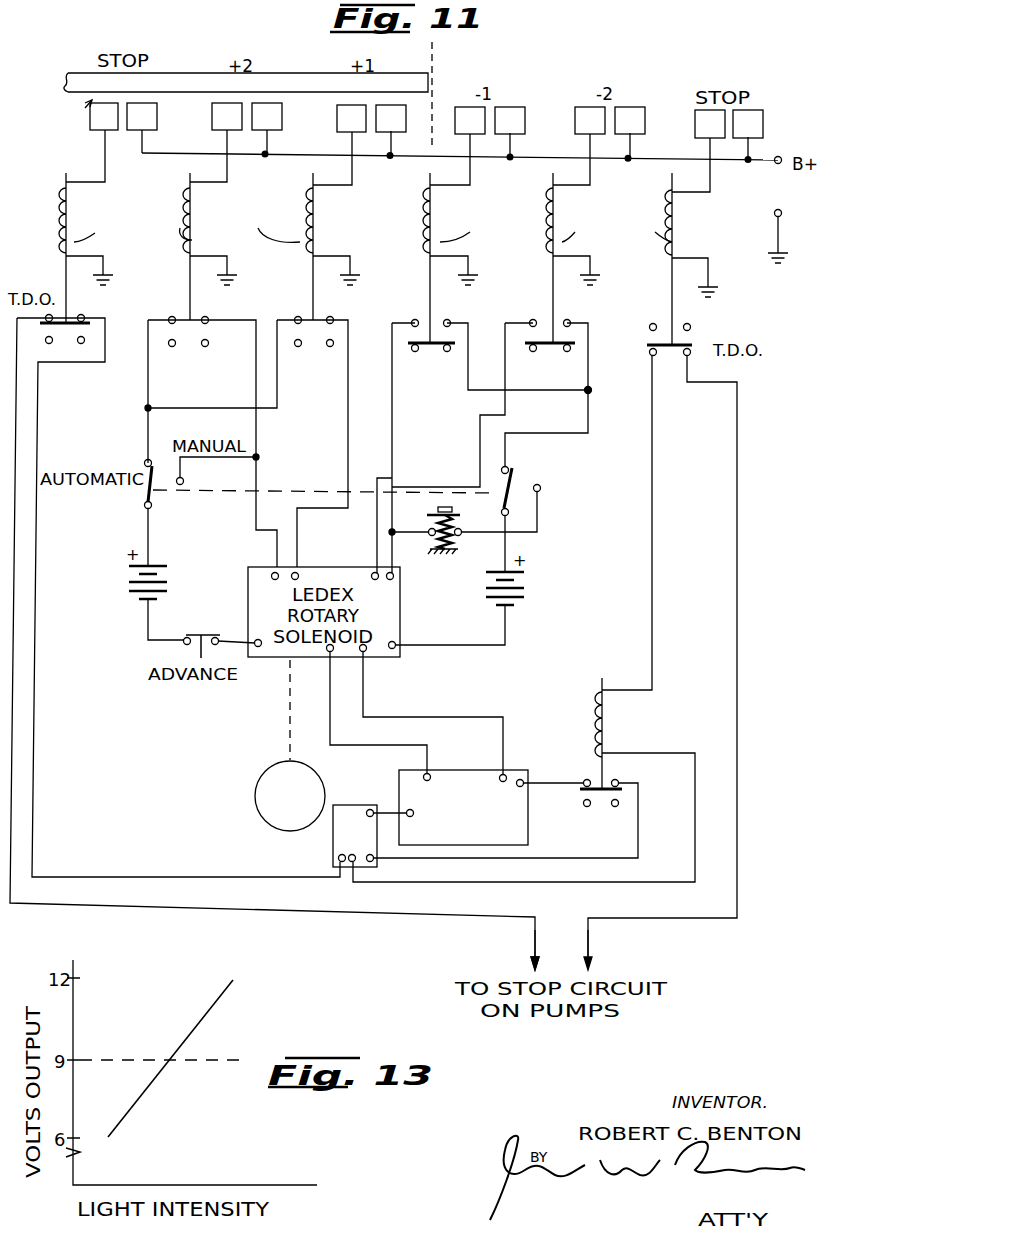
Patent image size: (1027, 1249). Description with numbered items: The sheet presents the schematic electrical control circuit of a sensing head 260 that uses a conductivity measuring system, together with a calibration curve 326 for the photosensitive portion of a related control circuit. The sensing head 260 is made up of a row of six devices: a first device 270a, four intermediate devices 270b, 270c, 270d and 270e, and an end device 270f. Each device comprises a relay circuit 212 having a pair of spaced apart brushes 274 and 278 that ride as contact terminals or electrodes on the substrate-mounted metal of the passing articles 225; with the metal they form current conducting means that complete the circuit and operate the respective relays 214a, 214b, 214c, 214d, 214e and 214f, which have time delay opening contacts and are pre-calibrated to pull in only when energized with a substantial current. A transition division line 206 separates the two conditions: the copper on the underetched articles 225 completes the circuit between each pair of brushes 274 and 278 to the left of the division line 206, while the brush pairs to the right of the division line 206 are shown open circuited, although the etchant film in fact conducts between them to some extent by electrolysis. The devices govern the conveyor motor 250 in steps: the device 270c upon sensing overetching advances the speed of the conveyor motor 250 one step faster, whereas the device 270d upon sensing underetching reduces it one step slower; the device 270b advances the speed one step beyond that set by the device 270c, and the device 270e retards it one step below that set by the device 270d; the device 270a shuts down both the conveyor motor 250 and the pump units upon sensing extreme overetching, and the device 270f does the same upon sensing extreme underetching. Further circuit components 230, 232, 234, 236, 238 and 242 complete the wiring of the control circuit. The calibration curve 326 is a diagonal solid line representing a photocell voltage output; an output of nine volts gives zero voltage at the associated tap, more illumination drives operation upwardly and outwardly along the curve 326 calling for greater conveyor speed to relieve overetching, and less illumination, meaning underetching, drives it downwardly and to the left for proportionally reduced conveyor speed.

In FIG. 11, the transition division line 206 is at (433, 84).
In FIG. 11, the relay circuit 212 is at (105, 168).
In FIG. 11, the relay 214a is at (66, 275).
In FIG. 11, the plus two station relay 214b is at (190, 278).
In FIG. 11, the relay 214c is at (313, 283).
In FIG. 11, the minus one station relay 214d is at (430, 277).
In FIG. 11, the minus two station relay 214e is at (553, 283).
In FIG. 11, the relay 214f is at (672, 294).
In FIG. 11, the underetched articles 225 is at (285, 92).
In FIG. 11, the relay 230 is at (454, 513).
In FIG. 11, the speed dial 232 is at (297, 828).
In FIG. 11, the power supply 234 is at (352, 806).
In FIG. 11, the lead to stop circuit on pumps 236 is at (533, 932).
In FIG. 11, the lead to stop circuit on pumps 238 is at (591, 936).
In FIG. 11, the relay coil 242 is at (603, 770).
In FIG. 11, the conveyor motor 250 is at (528, 838).
In FIG. 11, the sensing head 260 is at (84, 100).
In FIG. 11, the device 270a is at (180, 66).
In FIG. 11, the device 270b is at (286, 67).
In FIG. 11, the intermediate device 270c is at (410, 66).
In FIG. 11, the device 270d is at (545, 109).
In FIG. 11, the device 270e is at (672, 85).
In FIG. 11, the end device 270f is at (779, 109).
In FIG. 11, the brush 274 is at (107, 118).
In FIG. 11, the brush 278 is at (146, 118).
In FIG. 13, the calibration curve 326 is at (210, 1004).